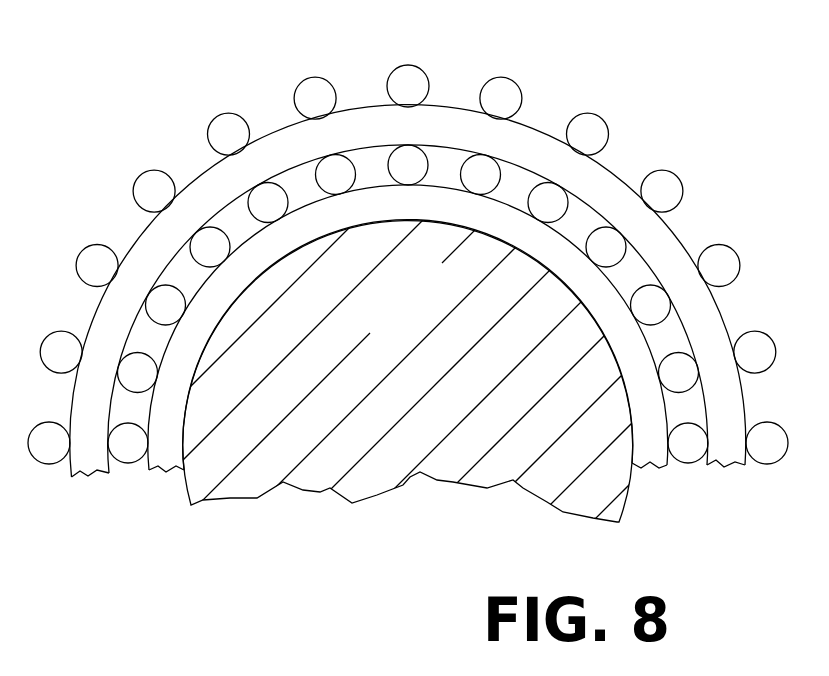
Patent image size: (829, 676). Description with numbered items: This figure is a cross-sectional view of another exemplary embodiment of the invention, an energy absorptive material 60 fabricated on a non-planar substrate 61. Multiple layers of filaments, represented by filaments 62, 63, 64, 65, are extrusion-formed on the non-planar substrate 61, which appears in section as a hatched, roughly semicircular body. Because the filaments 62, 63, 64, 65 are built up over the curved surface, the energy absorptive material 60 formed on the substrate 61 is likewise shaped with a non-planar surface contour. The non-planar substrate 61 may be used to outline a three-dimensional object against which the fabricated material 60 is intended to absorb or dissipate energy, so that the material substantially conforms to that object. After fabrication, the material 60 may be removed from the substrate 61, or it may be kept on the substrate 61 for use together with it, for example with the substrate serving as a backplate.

The energy absorptive material 60 is at (655, 82).
The non-planar substrate 61 is at (436, 317).
The filament 62 is at (650, 467).
The filament 63 is at (127, 462).
The filament 64 is at (725, 467).
The filament 65 is at (50, 463).